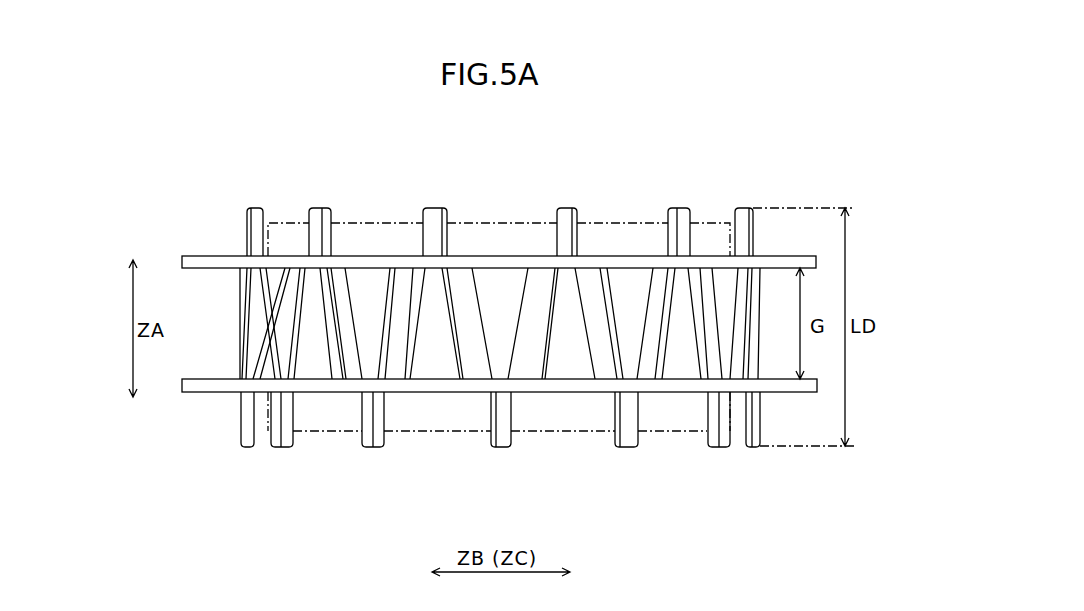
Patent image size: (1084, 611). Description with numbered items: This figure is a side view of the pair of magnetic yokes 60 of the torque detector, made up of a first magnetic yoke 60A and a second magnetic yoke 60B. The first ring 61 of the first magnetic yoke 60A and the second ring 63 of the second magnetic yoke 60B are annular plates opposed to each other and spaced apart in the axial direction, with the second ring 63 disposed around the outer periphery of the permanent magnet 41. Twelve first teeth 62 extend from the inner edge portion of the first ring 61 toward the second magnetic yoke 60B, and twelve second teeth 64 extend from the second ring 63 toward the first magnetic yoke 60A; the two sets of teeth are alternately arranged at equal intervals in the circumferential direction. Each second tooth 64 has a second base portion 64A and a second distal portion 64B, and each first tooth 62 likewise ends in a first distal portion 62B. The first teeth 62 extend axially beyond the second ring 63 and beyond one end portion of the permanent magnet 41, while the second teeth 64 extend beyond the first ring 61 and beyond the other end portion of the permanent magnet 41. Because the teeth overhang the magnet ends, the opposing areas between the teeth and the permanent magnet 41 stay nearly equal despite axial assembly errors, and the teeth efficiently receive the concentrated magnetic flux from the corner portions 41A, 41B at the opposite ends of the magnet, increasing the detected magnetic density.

The magnetic yokes 60 is at (212, 151).
The first magnetic yoke 60A is at (215, 256).
The second magnetic yoke 60B is at (215, 393).
The first ring 61 is at (200, 273).
The second ring 63 is at (201, 374).
The second teeth 64 is at (258, 206).
The second base portion 64A is at (246, 327).
The second distal portion 64B is at (246, 214).
The first teeth 62 is at (248, 448).
The first distal portion 62B is at (241, 425).
The permanent magnet 41 is at (537, 452).
The corner portion 41A is at (371, 222).
The corner portion 41B is at (437, 433).